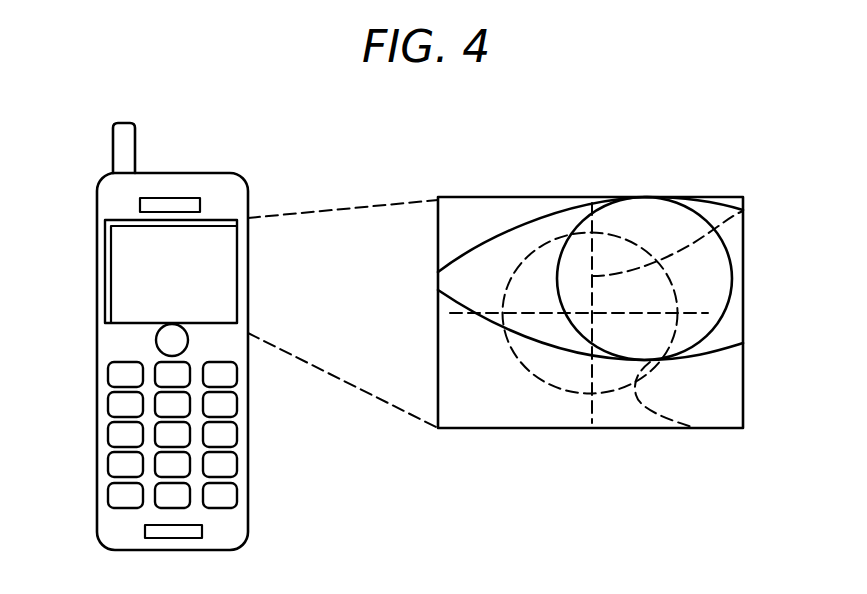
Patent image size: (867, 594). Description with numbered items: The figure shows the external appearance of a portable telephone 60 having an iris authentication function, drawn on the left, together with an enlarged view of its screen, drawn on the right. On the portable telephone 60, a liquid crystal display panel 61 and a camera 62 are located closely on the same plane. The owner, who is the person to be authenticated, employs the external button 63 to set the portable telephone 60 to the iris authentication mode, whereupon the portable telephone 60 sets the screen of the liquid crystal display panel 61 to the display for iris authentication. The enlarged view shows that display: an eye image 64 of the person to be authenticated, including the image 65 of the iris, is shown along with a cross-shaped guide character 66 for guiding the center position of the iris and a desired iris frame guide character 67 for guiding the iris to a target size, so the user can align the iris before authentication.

The portable telephone 60 is at (170, 172).
The liquid crystal display panel 61 is at (108, 273).
The camera 62 is at (156, 342).
The external button 63 is at (81, 363).
The eye image 64 is at (722, 353).
The image of the iris 65 is at (730, 252).
The cross-shaped guide character 66 is at (743, 211).
The desired iris frame guide character 67 is at (695, 428).